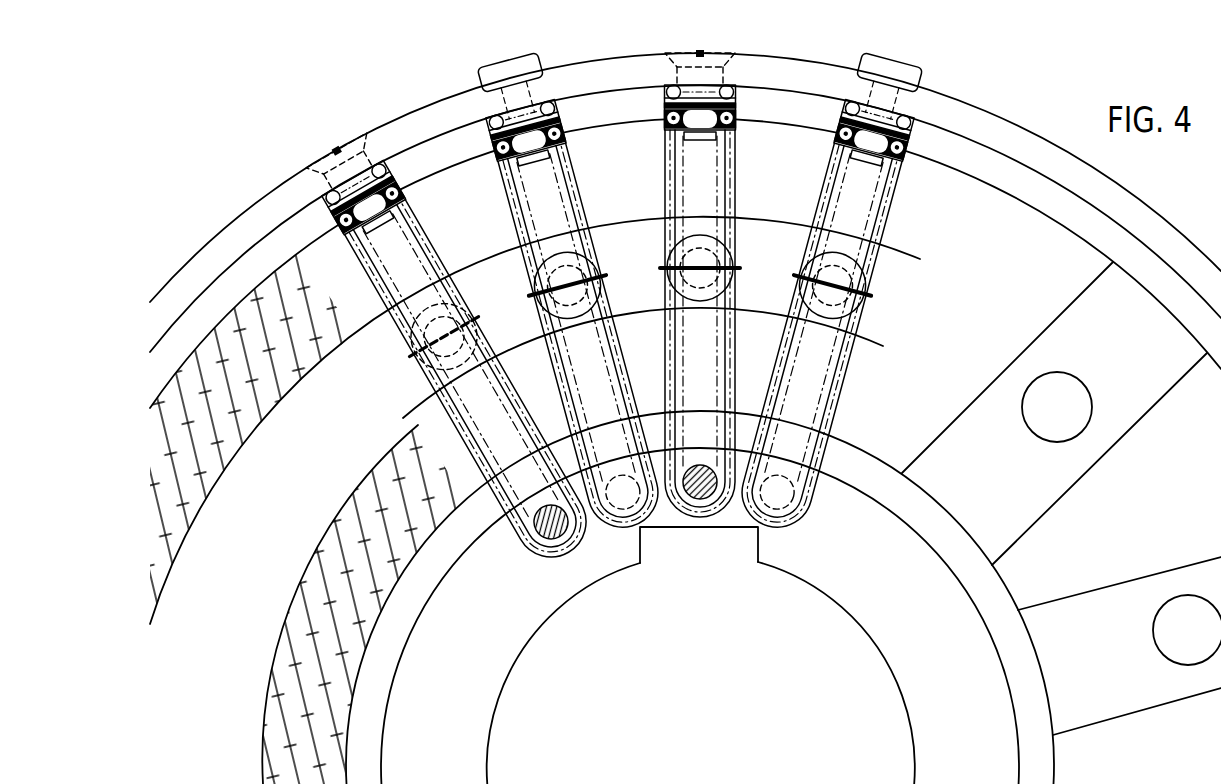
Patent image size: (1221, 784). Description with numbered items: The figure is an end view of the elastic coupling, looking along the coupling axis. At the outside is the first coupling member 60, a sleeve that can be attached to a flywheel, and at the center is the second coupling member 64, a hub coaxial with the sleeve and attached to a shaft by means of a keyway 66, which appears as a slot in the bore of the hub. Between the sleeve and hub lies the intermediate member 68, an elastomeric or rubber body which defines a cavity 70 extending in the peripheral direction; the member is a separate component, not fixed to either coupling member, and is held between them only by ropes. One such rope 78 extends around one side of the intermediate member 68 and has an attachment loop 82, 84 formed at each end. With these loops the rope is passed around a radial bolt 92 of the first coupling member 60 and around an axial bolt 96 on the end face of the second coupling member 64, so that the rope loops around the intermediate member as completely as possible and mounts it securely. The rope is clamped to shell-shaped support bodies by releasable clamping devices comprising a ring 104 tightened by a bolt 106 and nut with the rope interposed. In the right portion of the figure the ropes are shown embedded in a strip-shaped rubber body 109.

The first coupling member 60 is at (781, 72).
The second coupling member 64 is at (846, 575).
The keyway 66 is at (744, 530).
The intermediate member 68 is at (269, 404).
The cavity 70 is at (337, 604).
The rope 78 is at (735, 167).
The attachment loop 82 is at (738, 97).
The attachment loop 84 is at (720, 502).
The radial bolt 92 is at (712, 52).
The axial bolt 96 is at (686, 504).
The ring 104 is at (886, 273).
The bolt 106 is at (718, 238).
The strip-shaped rubber body 109 is at (1060, 356).